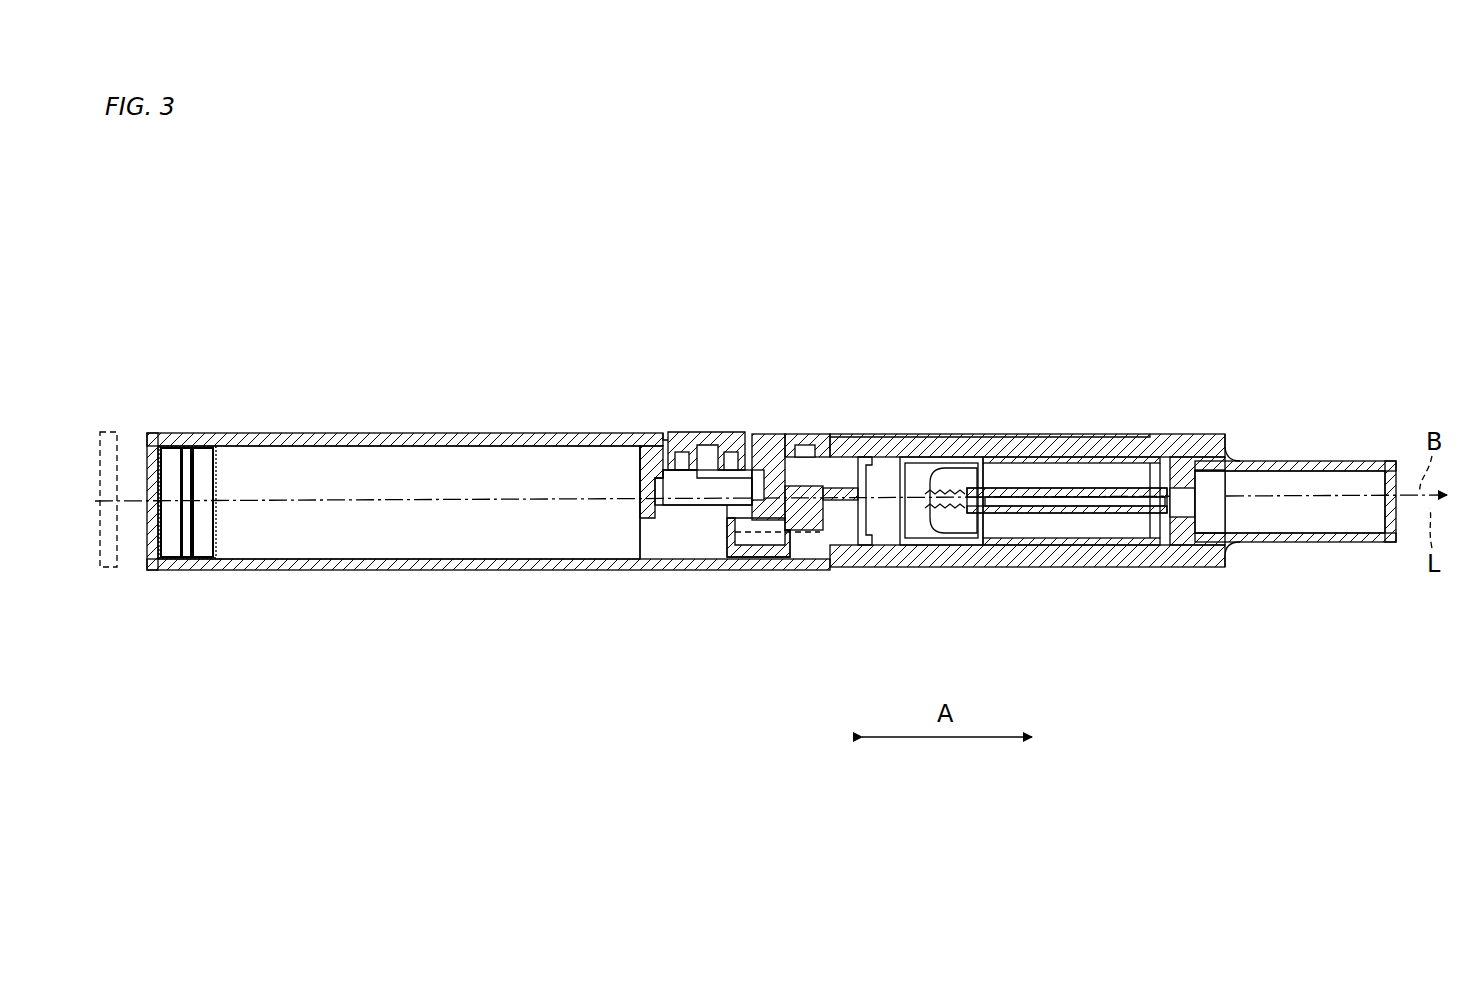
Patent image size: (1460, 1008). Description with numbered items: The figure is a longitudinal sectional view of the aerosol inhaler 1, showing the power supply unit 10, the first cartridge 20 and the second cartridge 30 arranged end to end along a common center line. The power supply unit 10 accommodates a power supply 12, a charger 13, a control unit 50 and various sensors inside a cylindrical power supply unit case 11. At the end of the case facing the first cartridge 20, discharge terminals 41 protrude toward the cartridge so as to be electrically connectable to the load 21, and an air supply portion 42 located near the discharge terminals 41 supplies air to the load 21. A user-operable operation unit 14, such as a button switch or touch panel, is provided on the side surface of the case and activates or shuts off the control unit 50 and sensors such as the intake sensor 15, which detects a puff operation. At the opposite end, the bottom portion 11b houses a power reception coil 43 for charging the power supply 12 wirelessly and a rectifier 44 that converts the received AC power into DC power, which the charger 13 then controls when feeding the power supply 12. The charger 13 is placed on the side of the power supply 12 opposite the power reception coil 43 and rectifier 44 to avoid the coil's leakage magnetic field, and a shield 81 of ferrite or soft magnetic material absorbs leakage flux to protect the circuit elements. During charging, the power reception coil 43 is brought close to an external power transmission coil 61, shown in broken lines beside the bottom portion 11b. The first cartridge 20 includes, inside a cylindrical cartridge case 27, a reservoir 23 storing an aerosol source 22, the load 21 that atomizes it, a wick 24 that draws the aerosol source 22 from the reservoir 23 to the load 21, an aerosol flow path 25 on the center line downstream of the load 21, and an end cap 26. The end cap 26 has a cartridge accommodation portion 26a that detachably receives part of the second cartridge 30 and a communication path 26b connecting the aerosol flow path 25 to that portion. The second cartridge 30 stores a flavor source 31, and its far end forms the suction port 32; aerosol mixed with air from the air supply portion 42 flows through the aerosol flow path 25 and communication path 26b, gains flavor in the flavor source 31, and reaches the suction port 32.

The aerosol inhaler 1 is at (1040, 285).
The power supply unit 10 is at (488, 486).
The power supply unit case 11 is at (488, 457).
The bottom portion 11b is at (190, 445).
The power supply 12 is at (440, 546).
The charger 13 is at (708, 505).
The control unit 50 is at (707, 487).
The operation unit 14 is at (720, 434).
The intake sensor 15 is at (758, 462).
The first cartridge 20 is at (1066, 481).
The load 21 is at (920, 470).
The aerosol source 22 is at (1045, 545).
The reservoir 23 is at (1020, 488).
The wick 24 is at (970, 468).
The aerosol flow path 25 is at (1098, 513).
The end cap 26 is at (1236, 481).
The cartridge accommodation portion 26a is at (1245, 522).
The communication path 26b is at (1232, 445).
The cartridge case 27 is at (1175, 440).
The second cartridge 30 is at (1296, 459).
The flavor source 31 is at (1280, 485).
The suction port 32 is at (1388, 470).
The discharge terminals 41 is at (862, 470).
The air supply portion 42 is at (810, 530).
The power reception coil 43 is at (170, 557).
The rectifier 44 is at (205, 557).
The shield 81 is at (202, 549).
The power transmission coil 61 is at (112, 432).